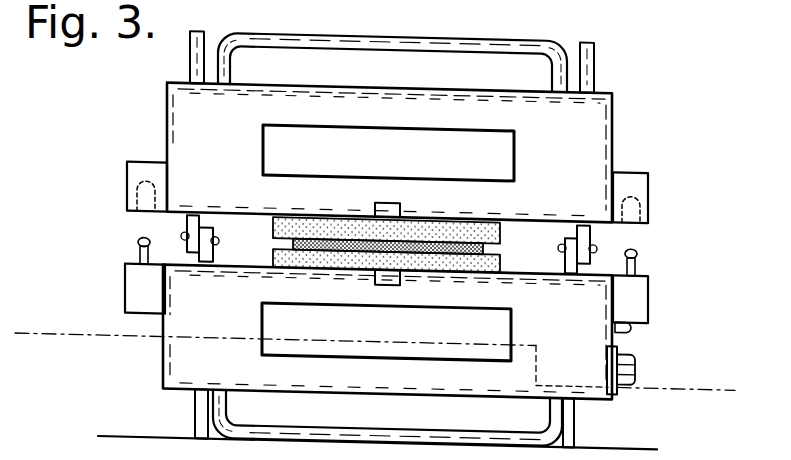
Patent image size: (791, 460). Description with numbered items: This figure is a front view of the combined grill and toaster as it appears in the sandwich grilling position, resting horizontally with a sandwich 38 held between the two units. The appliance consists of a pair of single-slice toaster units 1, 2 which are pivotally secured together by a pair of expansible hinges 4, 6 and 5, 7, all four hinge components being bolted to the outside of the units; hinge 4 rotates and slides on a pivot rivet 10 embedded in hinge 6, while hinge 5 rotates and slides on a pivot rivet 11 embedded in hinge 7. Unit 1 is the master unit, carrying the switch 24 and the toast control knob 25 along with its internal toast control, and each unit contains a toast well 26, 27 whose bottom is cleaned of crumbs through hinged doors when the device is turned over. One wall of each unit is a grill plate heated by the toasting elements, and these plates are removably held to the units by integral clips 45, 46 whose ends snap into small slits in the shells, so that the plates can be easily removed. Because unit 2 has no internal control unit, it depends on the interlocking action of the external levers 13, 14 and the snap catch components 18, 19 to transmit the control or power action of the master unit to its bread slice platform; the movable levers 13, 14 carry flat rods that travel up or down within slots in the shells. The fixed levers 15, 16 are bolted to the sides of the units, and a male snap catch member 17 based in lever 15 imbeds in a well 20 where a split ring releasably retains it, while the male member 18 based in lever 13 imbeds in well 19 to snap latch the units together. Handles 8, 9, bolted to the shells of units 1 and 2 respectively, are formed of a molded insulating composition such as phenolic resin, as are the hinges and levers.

The toaster unit 1 is at (163, 357).
The toaster unit 2 is at (167, 118).
The expansible hinge 4 is at (576, 418).
The expansible hinge 5 is at (196, 418).
The expansible hinge 6 is at (592, 64).
The expansible hinge 7 is at (192, 62).
The handle 8 is at (388, 432).
The handle 9 is at (381, 46).
The pivot rivet 10 is at (593, 248).
The pivot rivet 11 is at (186, 237).
The external lever 13 is at (648, 300).
The external lever 14 is at (648, 180).
The external lever 15 is at (126, 300).
The external lever 16 is at (128, 170).
The male snap catch member 17 is at (136, 250).
The male snap catch member 18 is at (640, 262).
The well 19 is at (640, 222).
The well 20 is at (140, 200).
The switch 24 is at (630, 328).
The toast control knob 25 is at (638, 360).
The toast well 26 is at (383, 345).
The toast well 27 is at (400, 146).
The sandwich 38 is at (503, 258).
The clip 45 is at (400, 278).
The clip 46 is at (400, 210).